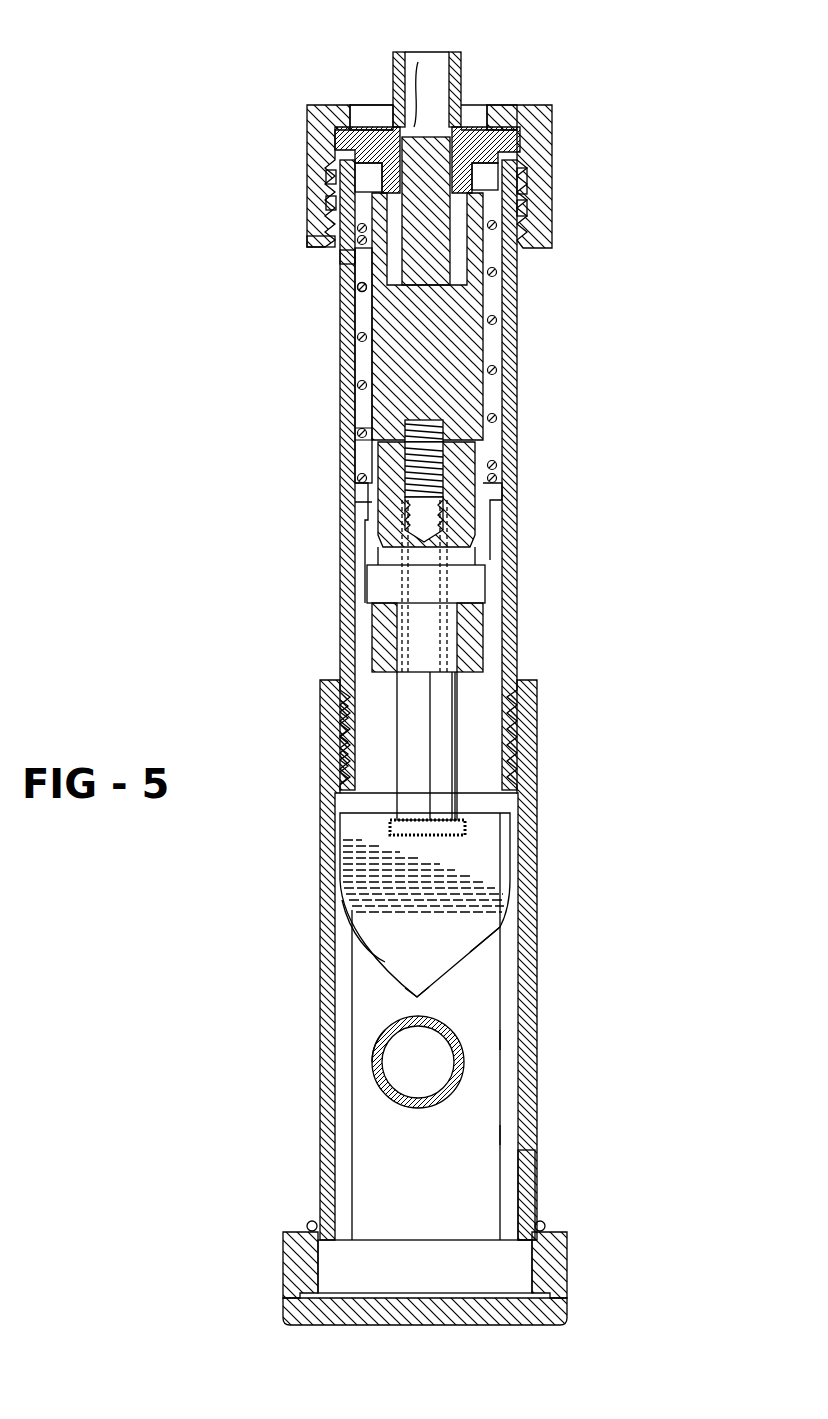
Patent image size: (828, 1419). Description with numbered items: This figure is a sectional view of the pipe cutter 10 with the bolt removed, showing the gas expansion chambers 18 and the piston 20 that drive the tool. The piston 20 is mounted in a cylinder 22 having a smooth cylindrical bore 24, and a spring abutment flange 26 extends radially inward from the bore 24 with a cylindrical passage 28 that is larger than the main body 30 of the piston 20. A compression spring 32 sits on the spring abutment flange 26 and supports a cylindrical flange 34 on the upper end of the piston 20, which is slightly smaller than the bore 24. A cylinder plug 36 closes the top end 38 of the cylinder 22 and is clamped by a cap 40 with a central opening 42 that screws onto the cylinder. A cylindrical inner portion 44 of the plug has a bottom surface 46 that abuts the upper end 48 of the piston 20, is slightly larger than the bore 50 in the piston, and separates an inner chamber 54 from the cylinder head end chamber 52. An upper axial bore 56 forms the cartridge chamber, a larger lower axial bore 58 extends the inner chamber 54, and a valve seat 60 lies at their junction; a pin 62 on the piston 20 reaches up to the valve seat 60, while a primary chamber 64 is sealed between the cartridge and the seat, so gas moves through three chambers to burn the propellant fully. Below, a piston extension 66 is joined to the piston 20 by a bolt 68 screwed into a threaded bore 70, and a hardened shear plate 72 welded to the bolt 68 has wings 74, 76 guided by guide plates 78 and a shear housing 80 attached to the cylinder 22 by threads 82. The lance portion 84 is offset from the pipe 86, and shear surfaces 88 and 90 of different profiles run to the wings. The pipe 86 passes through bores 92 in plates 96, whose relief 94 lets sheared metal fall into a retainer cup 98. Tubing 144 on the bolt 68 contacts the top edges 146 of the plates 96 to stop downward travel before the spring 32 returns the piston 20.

The pipe cutter 10 is at (642, 353).
The gas expansion chamber 18 is at (258, 132).
The piston 20 is at (347, 376).
The cylinder 22 is at (338, 456).
The cylindrical bore 24 is at (368, 312).
The spring abutment flange 26 is at (355, 517).
The cylindrical passage 28 is at (508, 492).
The main body 30 is at (488, 385).
The compression spring 32 is at (505, 333).
The cylindrical flange 34 is at (333, 200).
The cylinder plug 36 is at (490, 120).
The top end 38 is at (520, 136).
The cap 40 is at (335, 240).
The central opening 42 is at (362, 112).
The cylindrical inner portion 44 is at (512, 182).
The bottom surface 46 is at (500, 210).
The upper end 48 is at (330, 178).
The bore 50 is at (343, 258).
The cylinder head end chamber 52 is at (500, 172).
The inner chamber 54 is at (357, 280).
The upper axial bore 56 is at (399, 75).
The lower axial bore 58 is at (455, 186).
The valve seat 60 is at (440, 128).
The pin 62 is at (492, 262).
The primary chamber 64 is at (425, 128).
The piston extension 66 is at (367, 590).
The bolt 68 is at (433, 520).
The threaded bore 70 is at (400, 410).
The shear plate 72 is at (348, 912).
The wing 74 is at (395, 826).
The wing 76 is at (505, 826).
The guide plate 78 is at (337, 1098).
The shear housing 80 is at (533, 1165).
The threads 82 is at (525, 718).
The lance portion 84 is at (412, 1000).
The pipe 86 is at (378, 1030).
The shear surface 88 is at (378, 950).
The shear surface 90 is at (500, 957).
The bore 92 is at (395, 1104).
The relief 94 is at (500, 1137).
The plate 96 is at (500, 1040).
The retainer cup 98 is at (283, 1275).
The tubing 144 is at (372, 630).
The top edges 146 is at (345, 768).